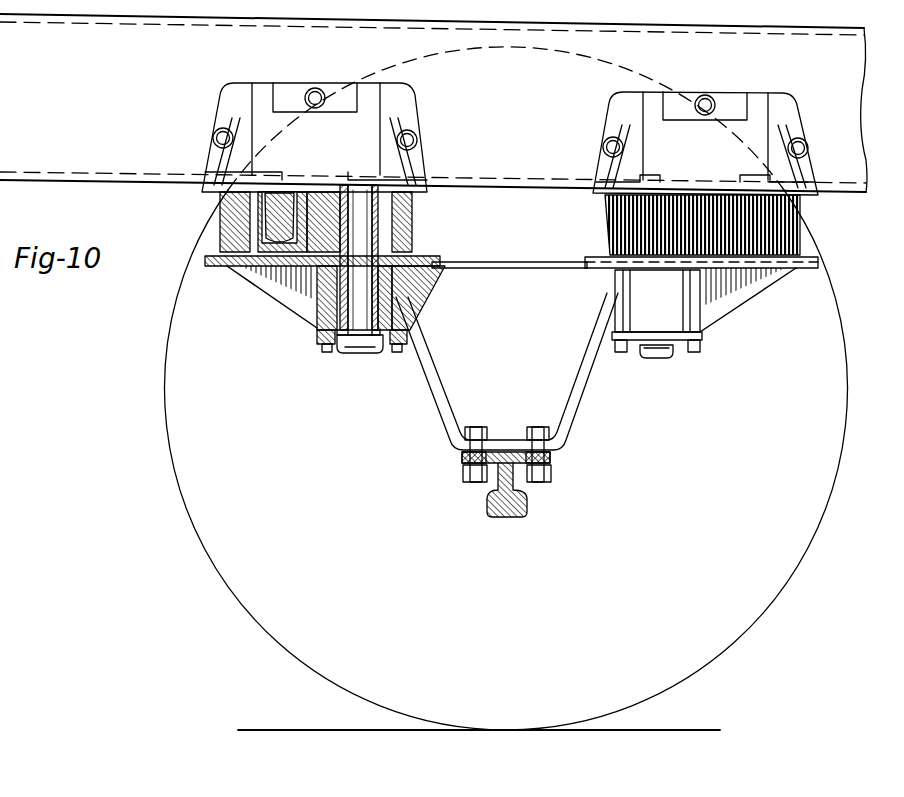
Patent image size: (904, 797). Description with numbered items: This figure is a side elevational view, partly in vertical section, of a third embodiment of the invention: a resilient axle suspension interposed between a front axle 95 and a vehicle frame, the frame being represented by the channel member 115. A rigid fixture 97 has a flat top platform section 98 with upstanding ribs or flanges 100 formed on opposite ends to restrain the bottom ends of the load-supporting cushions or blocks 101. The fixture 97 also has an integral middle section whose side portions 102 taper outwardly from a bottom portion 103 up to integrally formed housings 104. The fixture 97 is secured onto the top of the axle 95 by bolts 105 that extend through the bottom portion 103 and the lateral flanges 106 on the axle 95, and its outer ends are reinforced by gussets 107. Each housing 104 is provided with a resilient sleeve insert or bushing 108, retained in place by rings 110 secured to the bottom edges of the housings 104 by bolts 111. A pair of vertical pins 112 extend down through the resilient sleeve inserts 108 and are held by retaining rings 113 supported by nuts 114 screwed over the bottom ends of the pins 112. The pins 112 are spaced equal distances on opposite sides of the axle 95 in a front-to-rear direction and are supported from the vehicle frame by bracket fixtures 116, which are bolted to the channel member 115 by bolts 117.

The front axle 95 is at (528, 505).
The rigid fixture 97 is at (516, 214).
The flat top platform section 98 is at (535, 268).
The upstanding ribs or flanges 100 is at (207, 255).
The load-supporting cushions or blocks 101 is at (222, 200).
The side portions 102 is at (432, 392).
The bottom portion 103 is at (505, 416).
The housings 104 is at (318, 305).
The bolts 105 is at (545, 428).
The lateral flanges 106 is at (462, 456).
The gussets 107 is at (258, 282).
The resilient sleeve insert or bushing 108 is at (332, 348).
The rings 110 is at (315, 334).
The bolts 111 is at (398, 352).
The vertical pins 112 is at (350, 353).
The retaining rings 113 is at (337, 334).
The nuts 114 is at (372, 353).
The channel member 115 is at (862, 105).
The bracket fixtures 116 is at (312, 66).
The bolts 117 is at (418, 140).